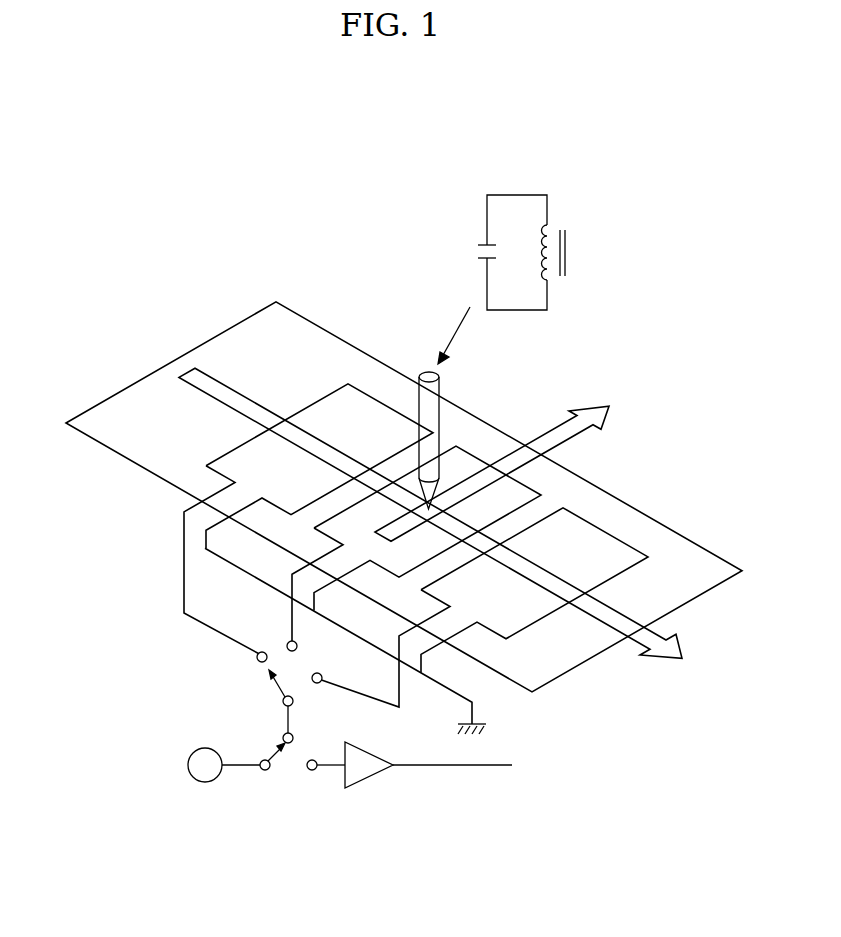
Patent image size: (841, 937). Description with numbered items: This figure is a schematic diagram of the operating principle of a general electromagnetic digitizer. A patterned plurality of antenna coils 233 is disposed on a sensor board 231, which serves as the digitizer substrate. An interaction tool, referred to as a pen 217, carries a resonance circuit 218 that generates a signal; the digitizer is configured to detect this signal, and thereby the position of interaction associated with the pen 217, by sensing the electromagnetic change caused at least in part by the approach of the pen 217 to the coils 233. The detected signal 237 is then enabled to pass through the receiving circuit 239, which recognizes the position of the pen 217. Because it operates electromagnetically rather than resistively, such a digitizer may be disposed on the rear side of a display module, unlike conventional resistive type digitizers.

The sensor board 231 is at (120, 406).
The antenna coils 233 is at (607, 530).
The pen 217 is at (428, 371).
The resonance circuit 218 is at (586, 245).
The detected signal 237 is at (285, 795).
The receiving circuit 239 is at (386, 783).